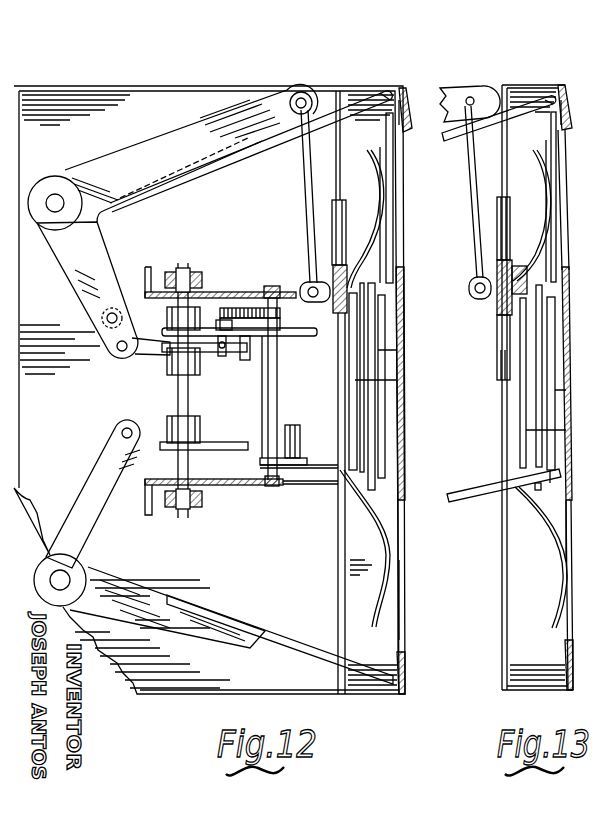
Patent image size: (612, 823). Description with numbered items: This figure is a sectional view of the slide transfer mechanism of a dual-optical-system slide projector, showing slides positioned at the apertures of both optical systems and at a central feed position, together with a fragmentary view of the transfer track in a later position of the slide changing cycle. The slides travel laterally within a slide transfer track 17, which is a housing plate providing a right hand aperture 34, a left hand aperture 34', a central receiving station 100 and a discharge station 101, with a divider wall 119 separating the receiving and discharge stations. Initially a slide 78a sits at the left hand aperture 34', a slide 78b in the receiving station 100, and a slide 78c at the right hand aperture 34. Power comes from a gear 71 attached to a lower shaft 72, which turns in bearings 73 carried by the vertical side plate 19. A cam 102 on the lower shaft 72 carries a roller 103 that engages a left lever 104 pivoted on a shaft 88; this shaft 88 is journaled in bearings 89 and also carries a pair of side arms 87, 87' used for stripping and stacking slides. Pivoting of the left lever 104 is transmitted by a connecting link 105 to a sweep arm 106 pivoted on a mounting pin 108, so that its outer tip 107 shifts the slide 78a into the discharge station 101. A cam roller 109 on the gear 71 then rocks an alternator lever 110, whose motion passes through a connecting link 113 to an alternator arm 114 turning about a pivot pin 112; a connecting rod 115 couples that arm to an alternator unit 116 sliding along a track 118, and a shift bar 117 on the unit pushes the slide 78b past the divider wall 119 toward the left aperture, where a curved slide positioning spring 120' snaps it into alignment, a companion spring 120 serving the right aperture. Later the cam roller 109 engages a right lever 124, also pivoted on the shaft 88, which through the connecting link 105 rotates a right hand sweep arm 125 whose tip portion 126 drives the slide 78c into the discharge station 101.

In FIG. 12, the slide transfer track 17 is at (400, 90).
In FIG. 13, the slide transfer track 17 is at (562, 90).
In FIG. 12, the vertical side plate 19 is at (145, 270).
In FIG. 12, the right hand aperture 34 is at (416, 215).
In FIG. 13, the right hand aperture 34 is at (579, 211).
In FIG. 12, the left hand aperture 34' is at (427, 576).
In FIG. 13, the left hand aperture 34' is at (589, 530).
In FIG. 12, the gear 71 is at (238, 306).
In FIG. 12, the lower shaft 72 is at (280, 396).
In FIG. 12, the bearings 73 is at (270, 286).
In FIG. 12, the slide 78a is at (404, 610).
In FIG. 12, the slide 78b is at (392, 415).
In FIG. 13, the slide 78b is at (569, 409).
In FIG. 12, the slide 78c is at (395, 230).
In FIG. 13, the slide 78c is at (558, 160).
In FIG. 12, the side arm 87 is at (181, 260).
In FIG. 12, the side arm 87' is at (208, 506).
In FIG. 12, the shaft 88 is at (178, 390).
In FIG. 12, the bearings 89 is at (200, 310).
In FIG. 12, the receiving station 100 is at (385, 352).
In FIG. 13, the receiving station 100 is at (579, 383).
In FIG. 12, the discharge station 101 is at (395, 378).
In FIG. 13, the discharge station 101 is at (560, 468).
In FIG. 12, the cam 102 is at (308, 468).
In FIG. 12, the roller 103 is at (302, 448).
In FIG. 12, the left lever 104 is at (235, 442).
In FIG. 12, the connecting link 105 is at (140, 358).
In FIG. 12, the sweep arm 106 is at (210, 632).
In FIG. 12, the outer tip 107 is at (368, 684).
In FIG. 13, the outer tip 107 is at (470, 492).
In FIG. 12, the mounting pin 108 is at (68, 580).
In FIG. 12, the cam roller 109 is at (255, 365).
In FIG. 12, the alternator lever 110 is at (317, 337).
In FIG. 12, the pivot pin 112 is at (55, 194).
In FIG. 12, the connecting link 113 is at (100, 310).
In FIG. 12, the alternator arm 114 is at (266, 104).
In FIG. 13, the alternator arm 114 is at (466, 95).
In FIG. 12, the connecting rod 115 is at (302, 178).
In FIG. 13, the connecting rod 115 is at (472, 178).
In FIG. 12, the alternator unit 116 is at (332, 217).
In FIG. 13, the alternator unit 116 is at (512, 288).
In FIG. 12, the shift bar 117 is at (360, 300).
In FIG. 13, the shift bar 117 is at (566, 367).
In FIG. 12, the track 118 is at (337, 592).
In FIG. 12, the divider wall 119 is at (370, 327).
In FIG. 13, the divider wall 119 is at (542, 325).
In FIG. 12, the slide positioning spring 120 is at (363, 219).
In FIG. 13, the slide positioning spring 120 is at (532, 215).
In FIG. 12, the slide positioning spring 120' is at (336, 548).
In FIG. 13, the slide positioning spring 120' is at (541, 557).
In FIG. 12, the right lever 124 is at (222, 358).
In FIG. 12, the right hand sweep arm 125 is at (160, 150).
In FIG. 12, the tip portion 126 is at (380, 92).
In FIG. 13, the tip portion 126 is at (543, 95).